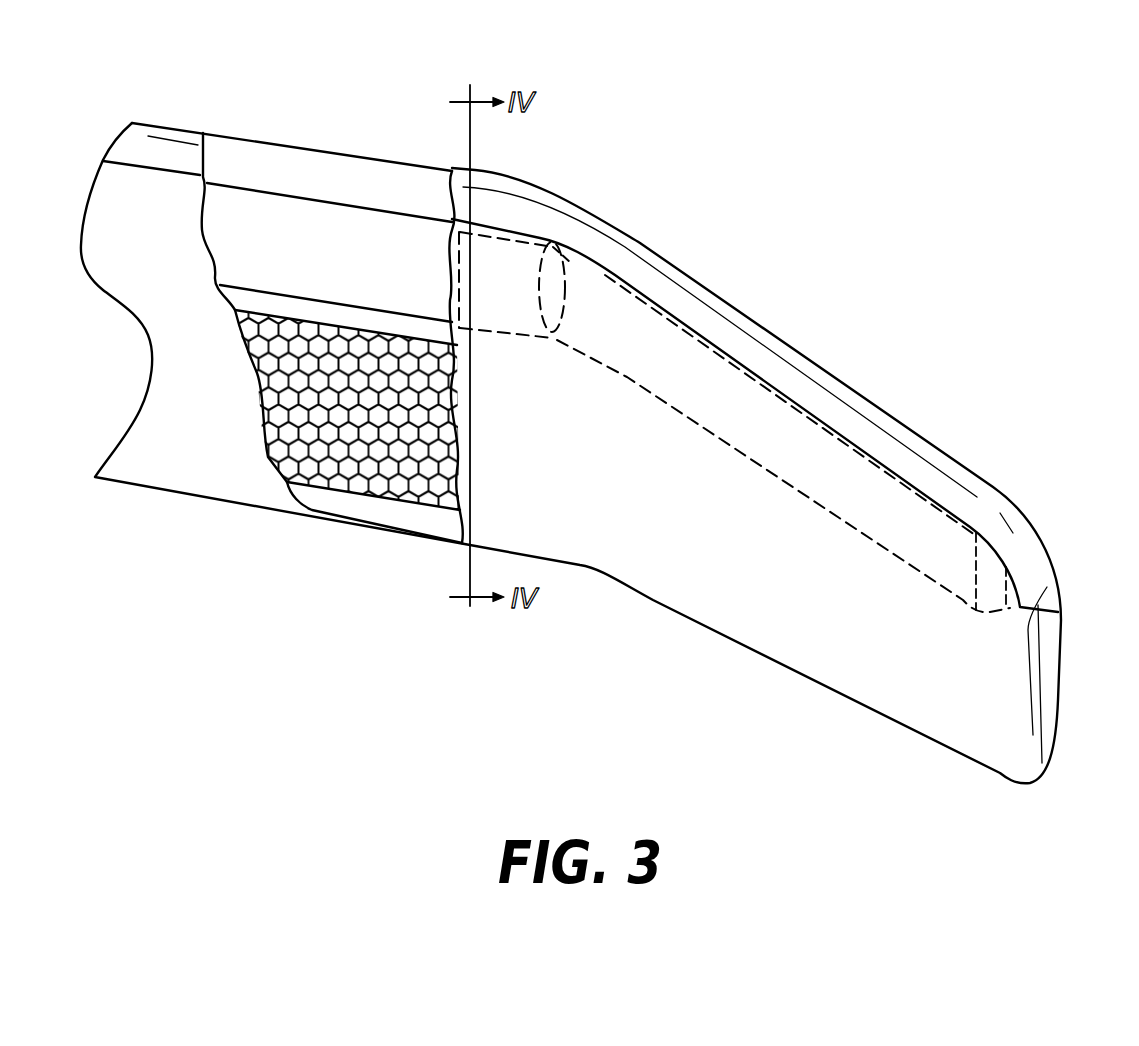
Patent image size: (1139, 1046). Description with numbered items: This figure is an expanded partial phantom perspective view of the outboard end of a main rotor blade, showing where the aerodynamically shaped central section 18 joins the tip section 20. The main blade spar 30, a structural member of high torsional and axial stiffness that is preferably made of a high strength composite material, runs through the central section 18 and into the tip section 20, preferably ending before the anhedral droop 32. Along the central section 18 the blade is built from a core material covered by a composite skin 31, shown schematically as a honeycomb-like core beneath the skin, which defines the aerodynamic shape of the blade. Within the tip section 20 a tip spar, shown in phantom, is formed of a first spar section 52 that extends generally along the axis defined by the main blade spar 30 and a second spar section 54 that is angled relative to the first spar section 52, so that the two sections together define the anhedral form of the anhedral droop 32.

The central section 18 is at (213, 377).
The tip section 20 is at (803, 218).
The main blade spar 30 is at (482, 233).
The composite skin 31 is at (372, 467).
The anhedral droop 32 is at (582, 606).
The first spar section 52 is at (556, 245).
The second spar section 54 is at (870, 510).